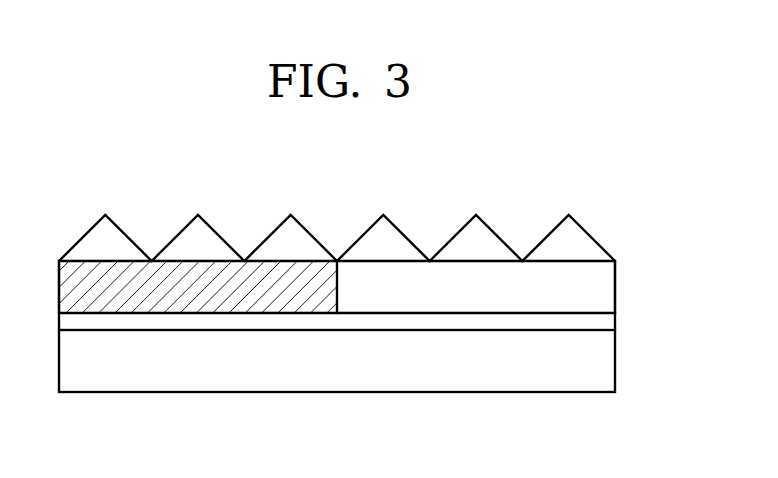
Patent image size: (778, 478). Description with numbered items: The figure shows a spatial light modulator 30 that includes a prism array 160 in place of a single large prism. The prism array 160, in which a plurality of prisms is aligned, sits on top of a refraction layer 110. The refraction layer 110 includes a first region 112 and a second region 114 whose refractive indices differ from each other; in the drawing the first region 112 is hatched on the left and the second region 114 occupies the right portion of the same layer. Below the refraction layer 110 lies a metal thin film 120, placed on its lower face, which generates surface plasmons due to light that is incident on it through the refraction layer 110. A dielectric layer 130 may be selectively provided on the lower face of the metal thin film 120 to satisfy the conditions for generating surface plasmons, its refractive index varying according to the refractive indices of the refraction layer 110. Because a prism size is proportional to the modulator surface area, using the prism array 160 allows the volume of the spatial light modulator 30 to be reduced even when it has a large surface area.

The spatial light modulator 30 is at (52, 168).
The refraction layer 110 is at (348, 349).
The first region 112 is at (198, 307).
The second region 114 is at (477, 305).
The metal thin film 120 is at (610, 320).
The dielectric layer 130 is at (610, 368).
The prism array 160 is at (610, 230).